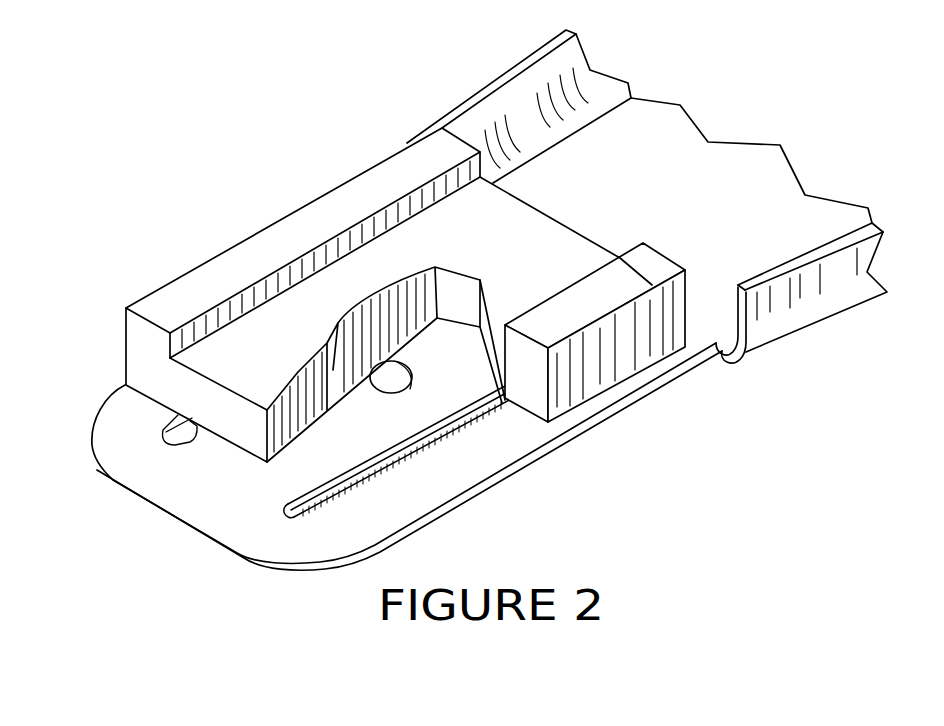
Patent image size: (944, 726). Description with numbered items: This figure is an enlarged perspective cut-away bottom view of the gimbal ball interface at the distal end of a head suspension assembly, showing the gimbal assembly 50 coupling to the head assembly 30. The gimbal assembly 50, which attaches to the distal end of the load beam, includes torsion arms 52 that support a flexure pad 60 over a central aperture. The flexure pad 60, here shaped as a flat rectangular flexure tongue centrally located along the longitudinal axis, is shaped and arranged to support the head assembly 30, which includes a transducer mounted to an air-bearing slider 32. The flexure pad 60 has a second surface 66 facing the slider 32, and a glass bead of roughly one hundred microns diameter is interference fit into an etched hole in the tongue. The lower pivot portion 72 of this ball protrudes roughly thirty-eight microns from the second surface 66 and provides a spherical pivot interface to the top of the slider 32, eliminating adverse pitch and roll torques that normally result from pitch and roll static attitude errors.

The head assembly 30 is at (197, 265).
The air-bearing slider 32 is at (653, 345).
The gimbal assembly 50 is at (172, 532).
The torsion arms 52 is at (420, 482).
The flexure pad 60 is at (462, 363).
The second surface 66 is at (213, 488).
The lower pivot portion 72 is at (385, 362).